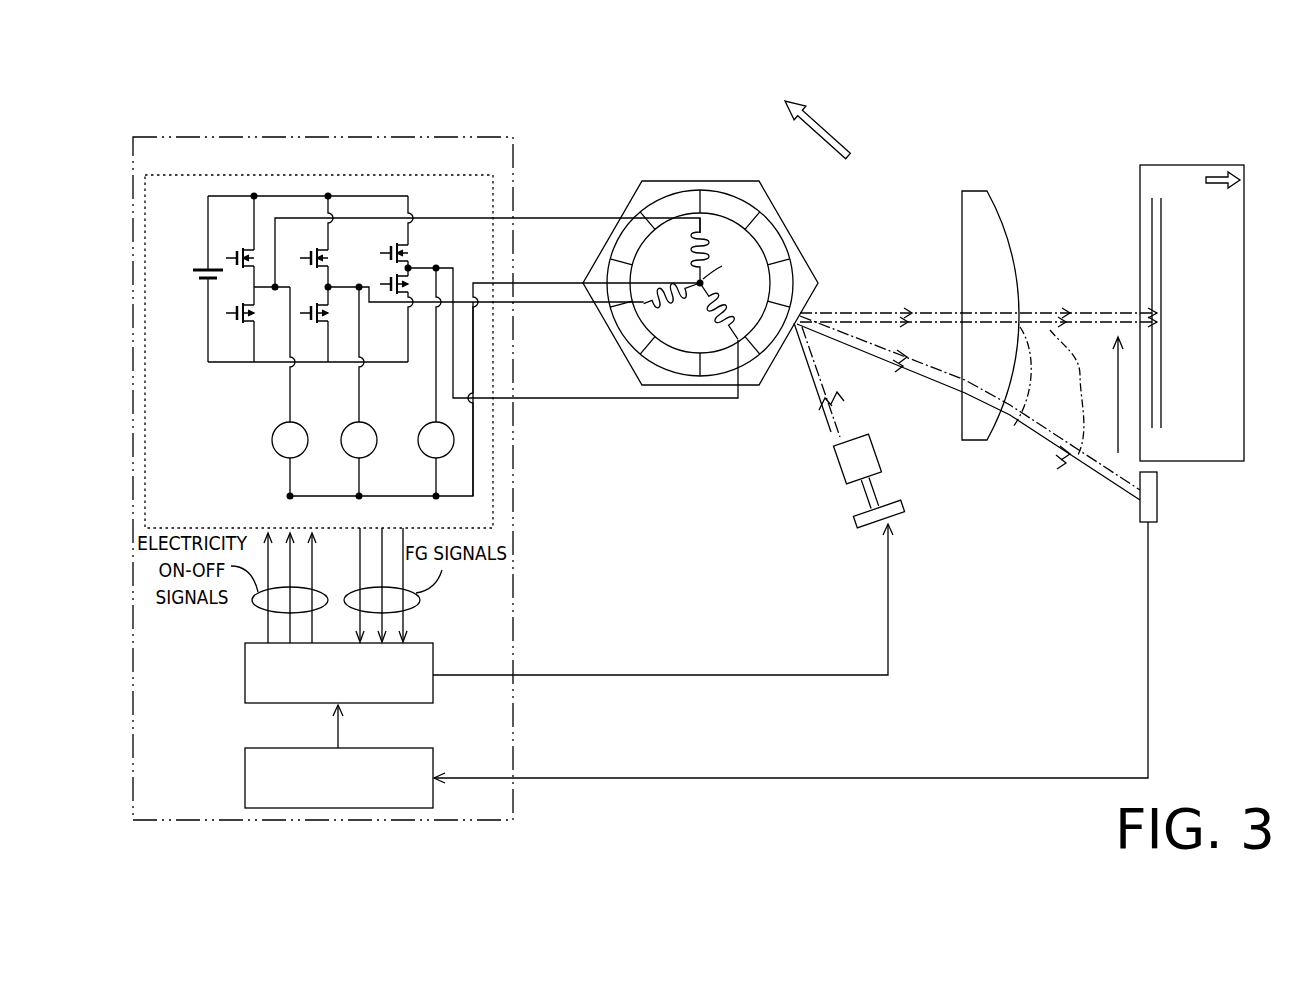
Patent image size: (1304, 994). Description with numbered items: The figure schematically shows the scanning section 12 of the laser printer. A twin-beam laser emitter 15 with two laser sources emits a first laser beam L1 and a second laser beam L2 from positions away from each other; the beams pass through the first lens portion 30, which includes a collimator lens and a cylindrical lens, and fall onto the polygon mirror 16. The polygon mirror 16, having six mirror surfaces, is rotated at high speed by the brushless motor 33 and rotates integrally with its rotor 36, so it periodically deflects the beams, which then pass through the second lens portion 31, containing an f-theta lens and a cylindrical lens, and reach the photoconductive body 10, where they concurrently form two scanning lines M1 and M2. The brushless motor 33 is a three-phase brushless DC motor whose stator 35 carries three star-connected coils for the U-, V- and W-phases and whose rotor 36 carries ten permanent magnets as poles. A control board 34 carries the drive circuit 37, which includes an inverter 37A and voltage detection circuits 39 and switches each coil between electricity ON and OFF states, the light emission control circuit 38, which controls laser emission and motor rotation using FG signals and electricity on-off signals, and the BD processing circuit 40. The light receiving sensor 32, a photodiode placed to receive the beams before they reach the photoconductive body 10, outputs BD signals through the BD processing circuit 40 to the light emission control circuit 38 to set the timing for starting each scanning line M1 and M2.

The photoconductive body 10 is at (1157, 288).
The scanning section 12 is at (962, 150).
The twin-beam laser emitter 15 is at (900, 509).
The polygon mirror 16 is at (725, 181).
The first lens portion 30 is at (873, 459).
The second lens portion 31 is at (977, 196).
The light receiving sensor 32 is at (1155, 500).
The brushless motor 33 is at (653, 191).
The control board 34 is at (381, 137).
The stator 35 is at (702, 228).
The rotor 36 is at (788, 268).
The drive circuit 37 is at (319, 304).
The inverter 37A is at (302, 196).
The light emission control circuit 38 is at (245, 684).
The voltage detection circuits 39 is at (281, 424).
The BD processing circuit 40 is at (245, 789).
The first laser beam L1 is at (1078, 367).
The second laser beam L2 is at (1032, 373).
The first scanning line M1 is at (1160, 216).
The second scanning line M2 is at (1152, 252).